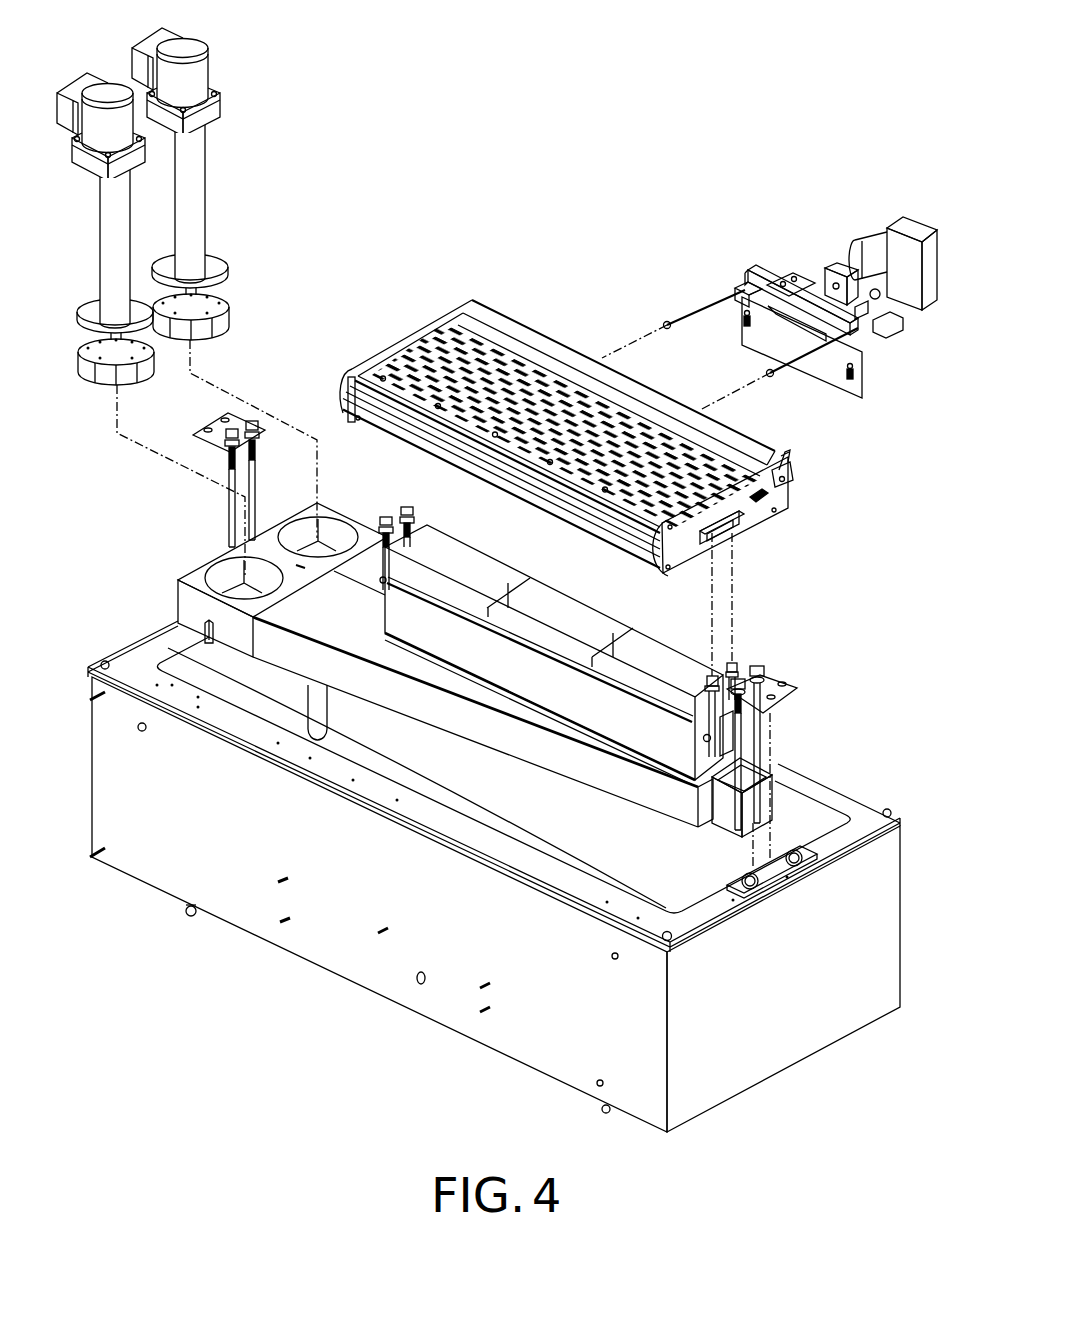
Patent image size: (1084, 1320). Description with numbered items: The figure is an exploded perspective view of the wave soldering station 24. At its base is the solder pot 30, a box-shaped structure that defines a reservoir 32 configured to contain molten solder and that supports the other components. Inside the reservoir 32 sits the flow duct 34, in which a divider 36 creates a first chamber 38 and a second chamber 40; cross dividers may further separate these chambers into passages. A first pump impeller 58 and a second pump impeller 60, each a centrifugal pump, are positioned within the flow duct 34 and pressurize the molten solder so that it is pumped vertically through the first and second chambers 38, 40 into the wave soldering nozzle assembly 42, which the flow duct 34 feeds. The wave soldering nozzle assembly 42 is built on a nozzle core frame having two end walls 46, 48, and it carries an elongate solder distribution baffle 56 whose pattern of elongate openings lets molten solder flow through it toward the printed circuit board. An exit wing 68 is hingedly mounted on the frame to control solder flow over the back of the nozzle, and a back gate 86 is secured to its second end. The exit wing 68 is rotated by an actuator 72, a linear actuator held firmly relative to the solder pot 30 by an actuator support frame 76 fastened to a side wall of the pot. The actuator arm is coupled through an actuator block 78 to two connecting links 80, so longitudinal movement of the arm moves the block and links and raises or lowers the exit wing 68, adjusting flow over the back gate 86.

The wave soldering station 24 is at (501, 578).
The solder pot 30 is at (805, 1030).
The reservoir 32 is at (820, 812).
The flow duct 34 is at (588, 707).
The divider 36 is at (660, 668).
The first chamber 38 is at (445, 560).
The second chamber 40 is at (565, 600).
The wave soldering nozzle assembly 42 is at (589, 416).
The end wall 46 is at (376, 350).
The end wall 48 is at (760, 515).
The solder distribution baffle 56 is at (480, 372).
The first pump impeller 58 is at (100, 140).
The second pump impeller 60 is at (178, 82).
The exit wing 68 is at (567, 380).
The actuator 72 is at (876, 255).
The actuator support frame 76 is at (862, 388).
The actuator block 78 is at (762, 268).
The connecting links 80 is at (712, 295).
The back gate 86 is at (783, 445).